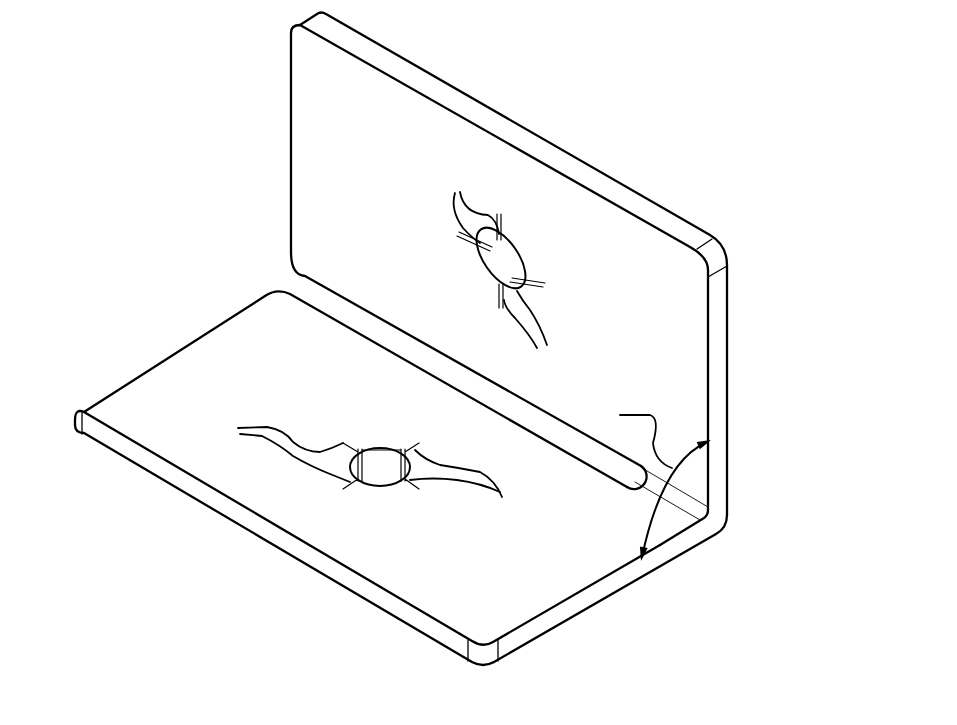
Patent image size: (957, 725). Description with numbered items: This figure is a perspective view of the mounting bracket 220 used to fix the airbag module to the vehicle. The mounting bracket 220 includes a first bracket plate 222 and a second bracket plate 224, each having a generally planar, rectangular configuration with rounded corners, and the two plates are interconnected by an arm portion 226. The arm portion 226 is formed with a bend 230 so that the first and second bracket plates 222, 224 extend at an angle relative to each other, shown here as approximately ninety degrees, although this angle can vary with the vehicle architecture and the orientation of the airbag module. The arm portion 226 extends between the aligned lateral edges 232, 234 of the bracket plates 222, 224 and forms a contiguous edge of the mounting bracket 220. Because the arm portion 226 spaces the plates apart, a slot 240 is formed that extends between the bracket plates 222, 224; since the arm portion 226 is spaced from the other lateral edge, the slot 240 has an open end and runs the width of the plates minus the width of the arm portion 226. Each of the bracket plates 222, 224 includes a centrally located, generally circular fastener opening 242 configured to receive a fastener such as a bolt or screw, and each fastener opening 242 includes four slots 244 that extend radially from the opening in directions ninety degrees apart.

The mounting bracket 220 is at (118, 155).
The first bracket plate 222 is at (668, 283).
The second bracket plate 224 is at (277, 503).
The arm portion 226 is at (690, 505).
The bend 230 is at (717, 513).
The lateral edge 232 is at (722, 367).
The lateral edge 234 is at (600, 593).
The slot 240 is at (362, 314).
The fastener opening 242 is at (492, 255).
The slots 244 is at (390, 341).